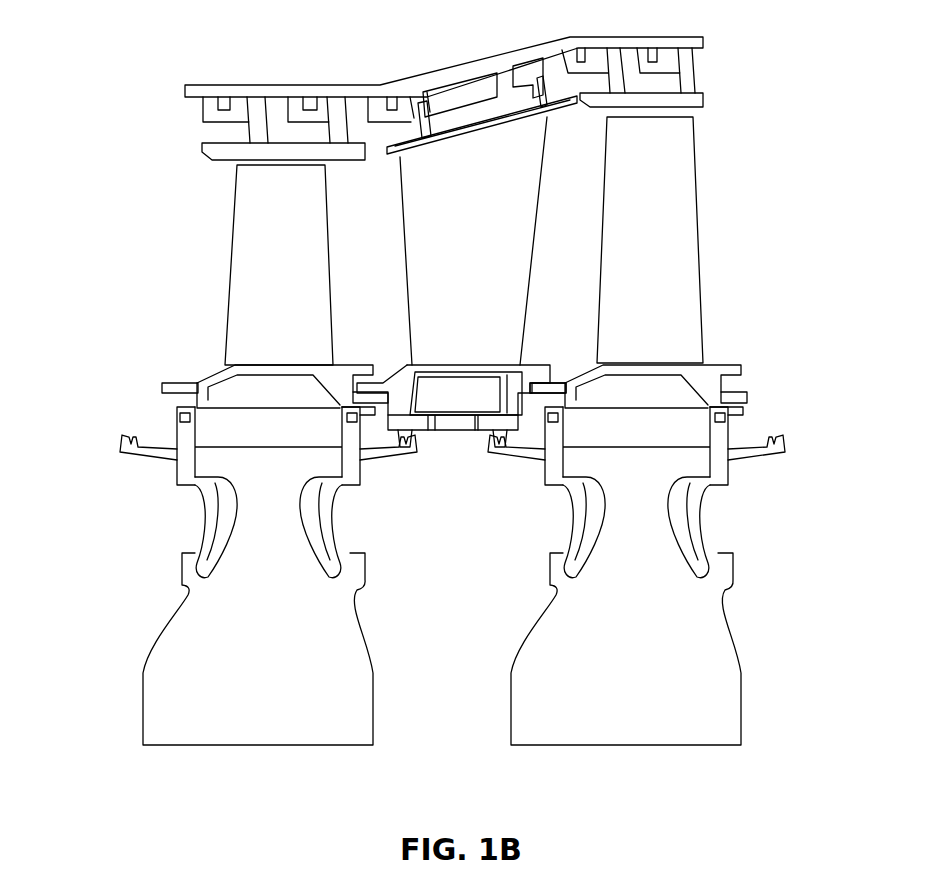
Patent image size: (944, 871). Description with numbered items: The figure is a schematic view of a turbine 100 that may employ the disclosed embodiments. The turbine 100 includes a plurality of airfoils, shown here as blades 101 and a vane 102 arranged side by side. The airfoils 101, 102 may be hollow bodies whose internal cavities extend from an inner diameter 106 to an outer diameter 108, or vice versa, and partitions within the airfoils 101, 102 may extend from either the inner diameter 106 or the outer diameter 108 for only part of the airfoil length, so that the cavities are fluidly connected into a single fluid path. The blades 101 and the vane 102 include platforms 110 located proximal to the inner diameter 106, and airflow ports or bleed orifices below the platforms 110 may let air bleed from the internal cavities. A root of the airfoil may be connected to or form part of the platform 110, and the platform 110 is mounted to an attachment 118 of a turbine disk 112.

The turbine 100 is at (122, 44).
The blade 101 is at (312, 217).
The vane 102 is at (510, 191).
The inner diameter 106 is at (391, 356).
The outer diameter 108 is at (220, 178).
The platform 110 is at (541, 363).
The turbine disk 112 is at (360, 698).
The attachment 118 is at (284, 438).